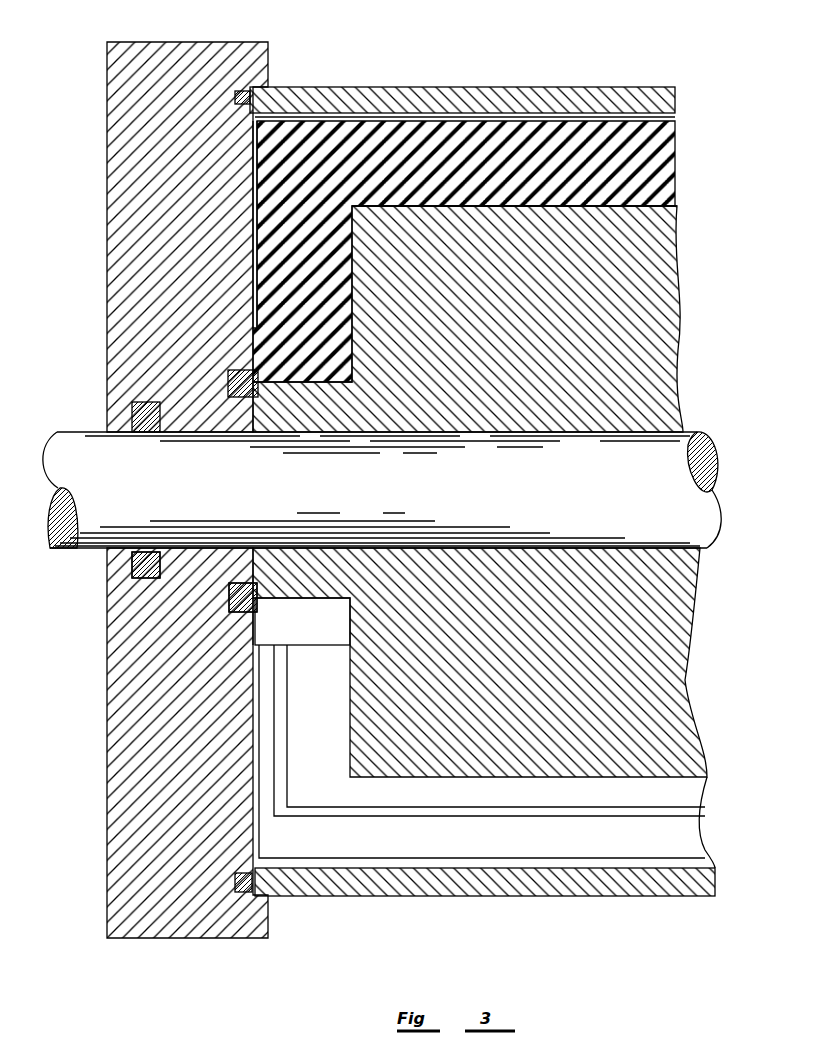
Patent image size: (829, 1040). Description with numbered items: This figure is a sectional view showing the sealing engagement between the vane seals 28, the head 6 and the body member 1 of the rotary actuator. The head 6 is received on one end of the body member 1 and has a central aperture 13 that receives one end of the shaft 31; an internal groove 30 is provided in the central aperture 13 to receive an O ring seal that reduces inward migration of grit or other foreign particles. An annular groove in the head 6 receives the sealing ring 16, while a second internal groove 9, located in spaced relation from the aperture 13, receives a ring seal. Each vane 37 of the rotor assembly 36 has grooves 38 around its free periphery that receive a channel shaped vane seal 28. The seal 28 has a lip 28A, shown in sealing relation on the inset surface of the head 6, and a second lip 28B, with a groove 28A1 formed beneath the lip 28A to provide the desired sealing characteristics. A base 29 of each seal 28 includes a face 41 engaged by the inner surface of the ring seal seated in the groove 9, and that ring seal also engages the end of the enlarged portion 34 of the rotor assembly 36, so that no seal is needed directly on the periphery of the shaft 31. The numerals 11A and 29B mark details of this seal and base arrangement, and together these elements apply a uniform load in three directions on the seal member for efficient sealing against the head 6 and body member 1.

The body member 1 is at (320, 87).
The head 6 is at (207, 42).
The second internal groove 9 is at (230, 612).
The seal ring 11A is at (230, 600).
The central aperture 13 is at (130, 565).
The sealing ring 16 is at (257, 87).
The vane seal 28 is at (465, 137).
The lip 28A is at (412, 862).
The groove 28A1 is at (695, 813).
The lip 28B is at (385, 117).
The base 29 is at (320, 620).
The chamber wall 29B is at (250, 615).
The internal groove 30 is at (133, 580).
The shaft 31 is at (675, 450).
The enlarged portion 34 is at (230, 373).
The rotor assembly 36 is at (252, 407).
The vane 37 is at (678, 240).
The groove 38 is at (673, 205).
The face 41 is at (257, 330).